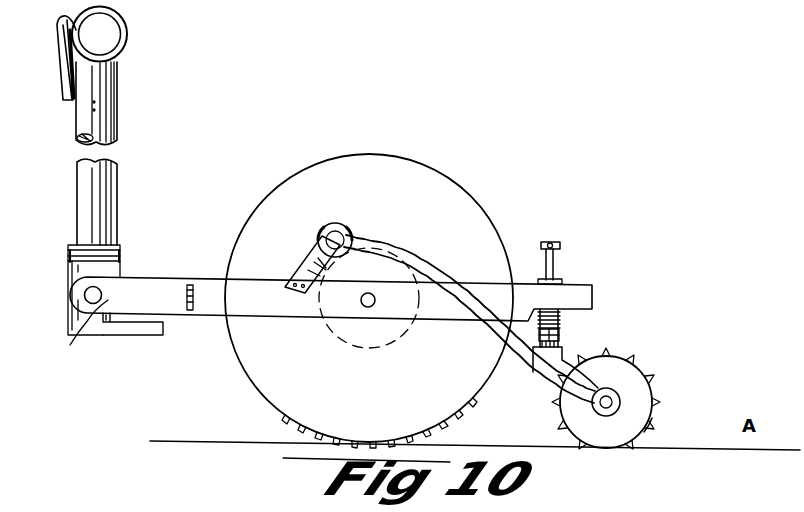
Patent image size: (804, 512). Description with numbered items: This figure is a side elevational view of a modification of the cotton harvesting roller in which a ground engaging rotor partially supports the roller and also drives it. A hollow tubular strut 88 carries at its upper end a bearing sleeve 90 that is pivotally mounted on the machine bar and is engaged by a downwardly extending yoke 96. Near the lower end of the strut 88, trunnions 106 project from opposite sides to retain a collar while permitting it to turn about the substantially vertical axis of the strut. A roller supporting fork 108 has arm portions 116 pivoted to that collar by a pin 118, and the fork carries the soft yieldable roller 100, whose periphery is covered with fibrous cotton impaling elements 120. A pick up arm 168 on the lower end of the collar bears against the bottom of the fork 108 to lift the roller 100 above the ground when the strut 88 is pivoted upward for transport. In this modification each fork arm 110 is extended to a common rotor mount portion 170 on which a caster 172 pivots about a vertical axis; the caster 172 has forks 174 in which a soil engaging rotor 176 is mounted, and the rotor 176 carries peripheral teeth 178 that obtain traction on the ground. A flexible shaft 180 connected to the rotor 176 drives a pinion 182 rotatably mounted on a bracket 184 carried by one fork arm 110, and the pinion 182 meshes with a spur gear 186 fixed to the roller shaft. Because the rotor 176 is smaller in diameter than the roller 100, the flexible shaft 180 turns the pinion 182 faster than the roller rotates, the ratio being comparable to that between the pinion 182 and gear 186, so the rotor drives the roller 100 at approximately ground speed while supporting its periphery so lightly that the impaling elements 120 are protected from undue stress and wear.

The strut 88 is at (98, 113).
The bearing sleeve 90 is at (127, 38).
The yoke 96 is at (68, 87).
The ground engaging roller 100 is at (286, 397).
The trunnion 106 is at (68, 248).
The roller supporting fork 108 is at (299, 302).
The free end (fork arm) 110 is at (432, 303).
The arm portion 116 is at (80, 295).
The pin 118 is at (82, 334).
The cotton impaling elements 120 is at (430, 433).
The pick up arm 168 is at (145, 327).
The rotor mount portion 170 is at (553, 295).
The caster 172 is at (555, 244).
The forks 174 is at (662, 392).
The soil engaging rotor 176 is at (613, 432).
The peripheral teeth 178 is at (650, 428).
The flexible shaft 180 is at (541, 371).
The pinion 182 is at (335, 228).
The bracket 184 is at (300, 283).
The spur gear 186 is at (388, 268).